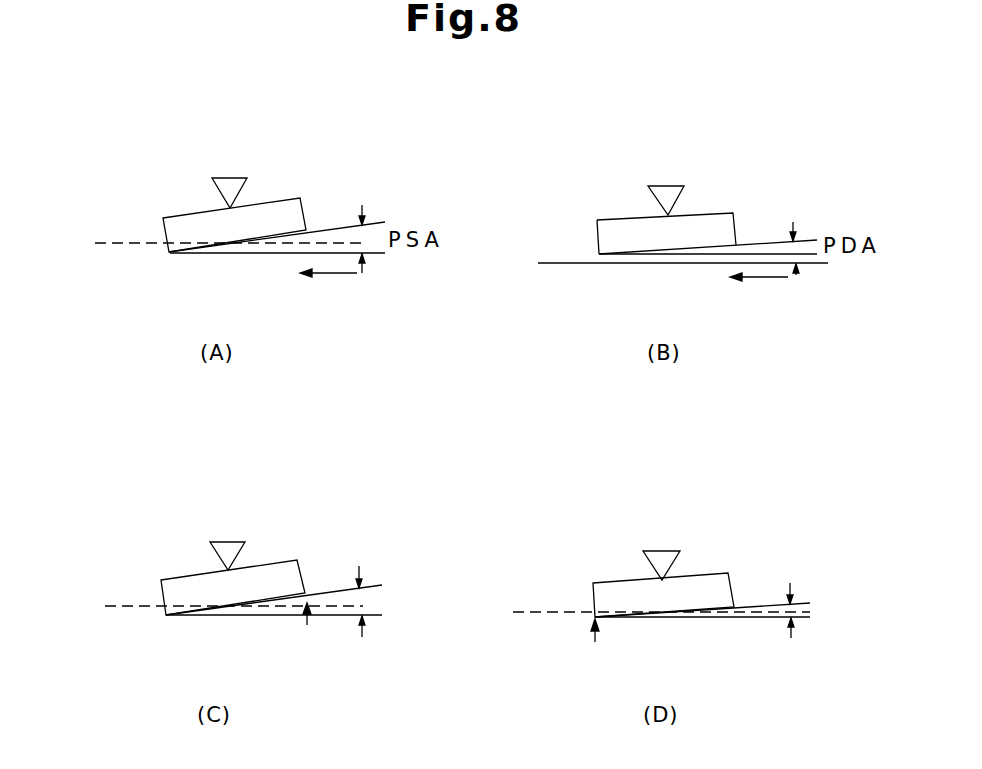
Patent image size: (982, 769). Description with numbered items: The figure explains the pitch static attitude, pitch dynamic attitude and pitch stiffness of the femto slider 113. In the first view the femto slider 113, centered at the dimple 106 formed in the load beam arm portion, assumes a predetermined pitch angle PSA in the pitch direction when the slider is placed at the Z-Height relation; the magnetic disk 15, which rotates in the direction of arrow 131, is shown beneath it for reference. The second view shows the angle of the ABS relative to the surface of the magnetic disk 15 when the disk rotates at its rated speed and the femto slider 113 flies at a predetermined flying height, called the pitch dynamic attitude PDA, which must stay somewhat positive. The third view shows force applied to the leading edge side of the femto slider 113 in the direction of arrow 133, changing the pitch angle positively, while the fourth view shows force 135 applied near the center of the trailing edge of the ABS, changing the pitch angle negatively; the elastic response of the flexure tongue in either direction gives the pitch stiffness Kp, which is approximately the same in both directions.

The magnetic disk 15 is at (120, 243).
The dimple 106 is at (233, 178).
The femto slider 113 is at (282, 200).
The arrow 131 is at (333, 273).
The arrow 133 is at (297, 607).
The force 135 is at (600, 637).